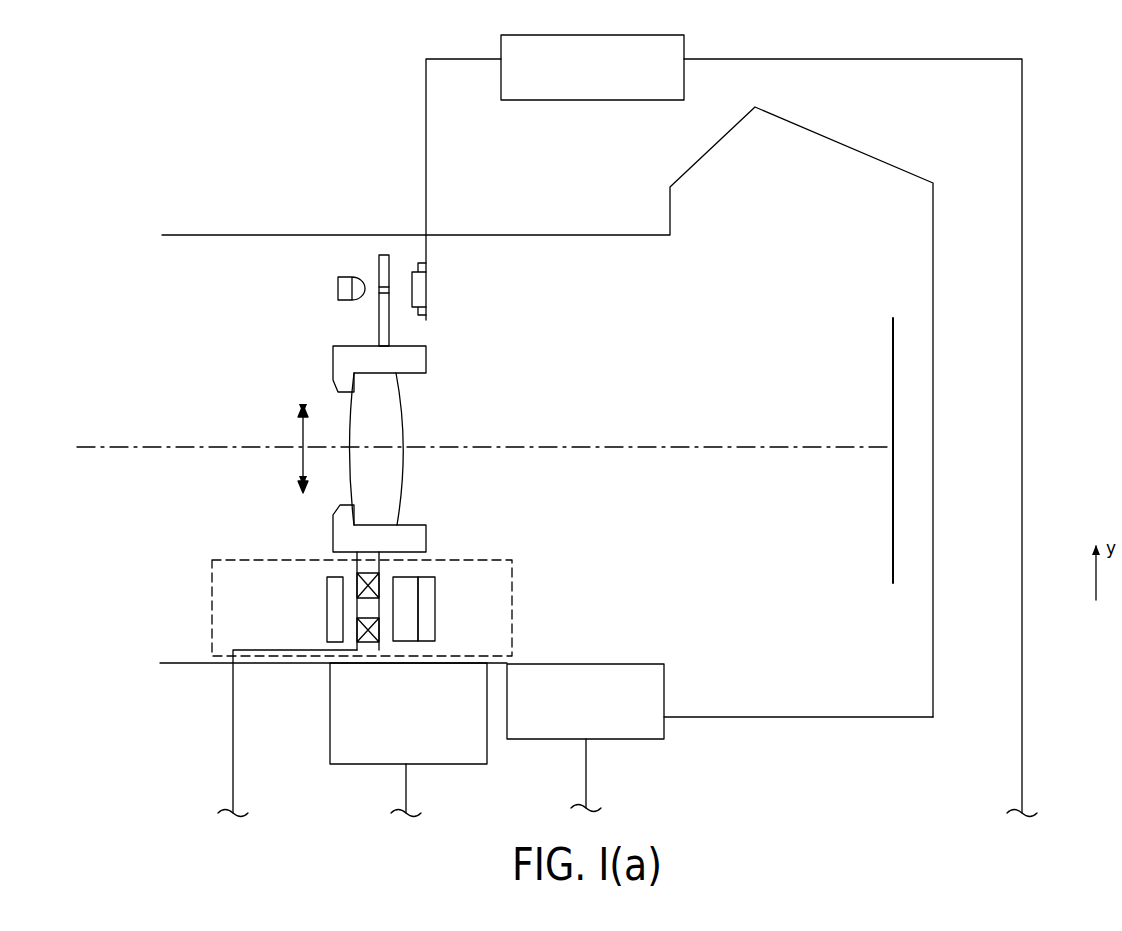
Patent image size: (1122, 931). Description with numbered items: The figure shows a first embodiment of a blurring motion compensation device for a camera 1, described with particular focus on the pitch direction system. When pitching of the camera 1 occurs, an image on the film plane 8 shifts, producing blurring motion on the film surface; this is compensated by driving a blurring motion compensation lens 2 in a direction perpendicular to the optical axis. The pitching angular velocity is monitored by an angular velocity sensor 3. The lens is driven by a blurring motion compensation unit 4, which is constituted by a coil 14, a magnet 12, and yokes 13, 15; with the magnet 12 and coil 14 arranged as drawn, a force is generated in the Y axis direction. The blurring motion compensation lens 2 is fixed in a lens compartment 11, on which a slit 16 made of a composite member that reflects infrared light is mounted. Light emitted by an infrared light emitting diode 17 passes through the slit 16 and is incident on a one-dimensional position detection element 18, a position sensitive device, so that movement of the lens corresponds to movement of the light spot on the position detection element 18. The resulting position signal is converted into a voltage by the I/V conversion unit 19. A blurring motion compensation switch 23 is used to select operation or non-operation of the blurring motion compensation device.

The camera 1 is at (935, 285).
The blurring motion compensation lens 2 is at (352, 412).
The angular velocity sensor 3 is at (613, 739).
The blurring motion compensation unit 4 is at (288, 560).
The film plane 8 is at (893, 508).
The lens compartment 11 is at (337, 358).
The magnet 12 is at (408, 582).
The yoke 13 is at (430, 620).
The coil 14 is at (362, 643).
The yoke 15 is at (327, 605).
The slit 16 is at (383, 255).
The infrared light emitting diode (IRED) 17 is at (337, 285).
The position detection element (PSD) 18 is at (424, 283).
The I/V conversion unit 19 is at (633, 100).
The blurring motion compensation switch 23 is at (375, 764).